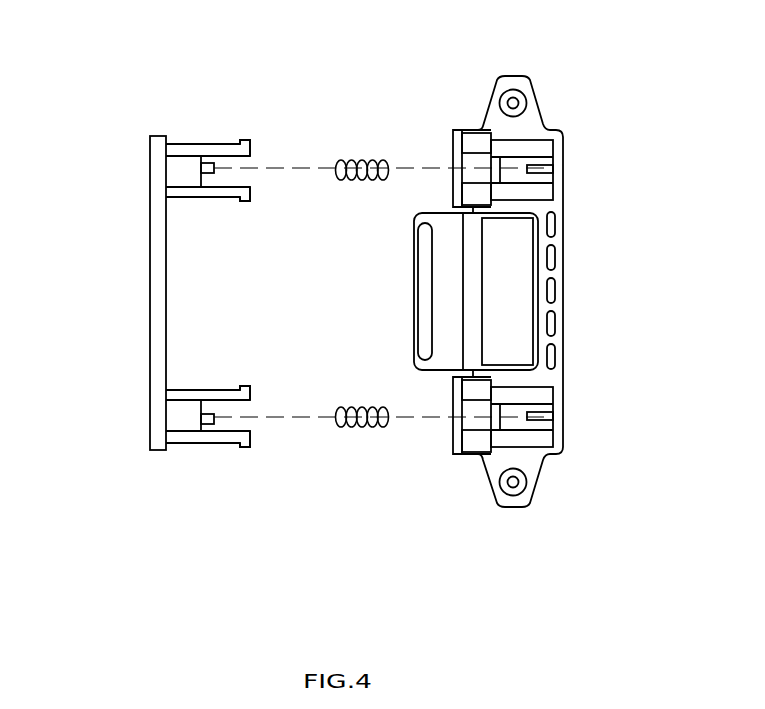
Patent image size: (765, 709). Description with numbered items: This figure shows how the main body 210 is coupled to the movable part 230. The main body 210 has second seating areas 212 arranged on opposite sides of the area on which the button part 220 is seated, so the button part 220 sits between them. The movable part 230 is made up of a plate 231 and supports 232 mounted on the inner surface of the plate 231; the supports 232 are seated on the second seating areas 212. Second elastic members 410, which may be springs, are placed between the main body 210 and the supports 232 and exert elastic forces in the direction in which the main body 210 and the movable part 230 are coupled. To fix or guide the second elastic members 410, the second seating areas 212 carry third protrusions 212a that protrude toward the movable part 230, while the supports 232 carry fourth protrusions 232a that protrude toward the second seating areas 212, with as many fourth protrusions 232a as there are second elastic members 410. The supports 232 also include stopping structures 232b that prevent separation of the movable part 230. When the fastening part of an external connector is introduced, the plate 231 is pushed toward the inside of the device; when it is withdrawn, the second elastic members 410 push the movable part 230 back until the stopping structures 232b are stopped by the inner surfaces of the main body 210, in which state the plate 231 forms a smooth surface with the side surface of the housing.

The main body 210 is at (541, 465).
The second seating areas 212 is at (548, 148).
The third protrusions 212a is at (549, 170).
The button part 220 is at (443, 360).
The movable part 230 is at (199, 297).
The plate 231 is at (158, 451).
The supports 232 is at (236, 192).
The fourth protrusions 232a is at (210, 163).
The stopping structures 232b is at (248, 194).
The second elastic members 410 is at (355, 182).